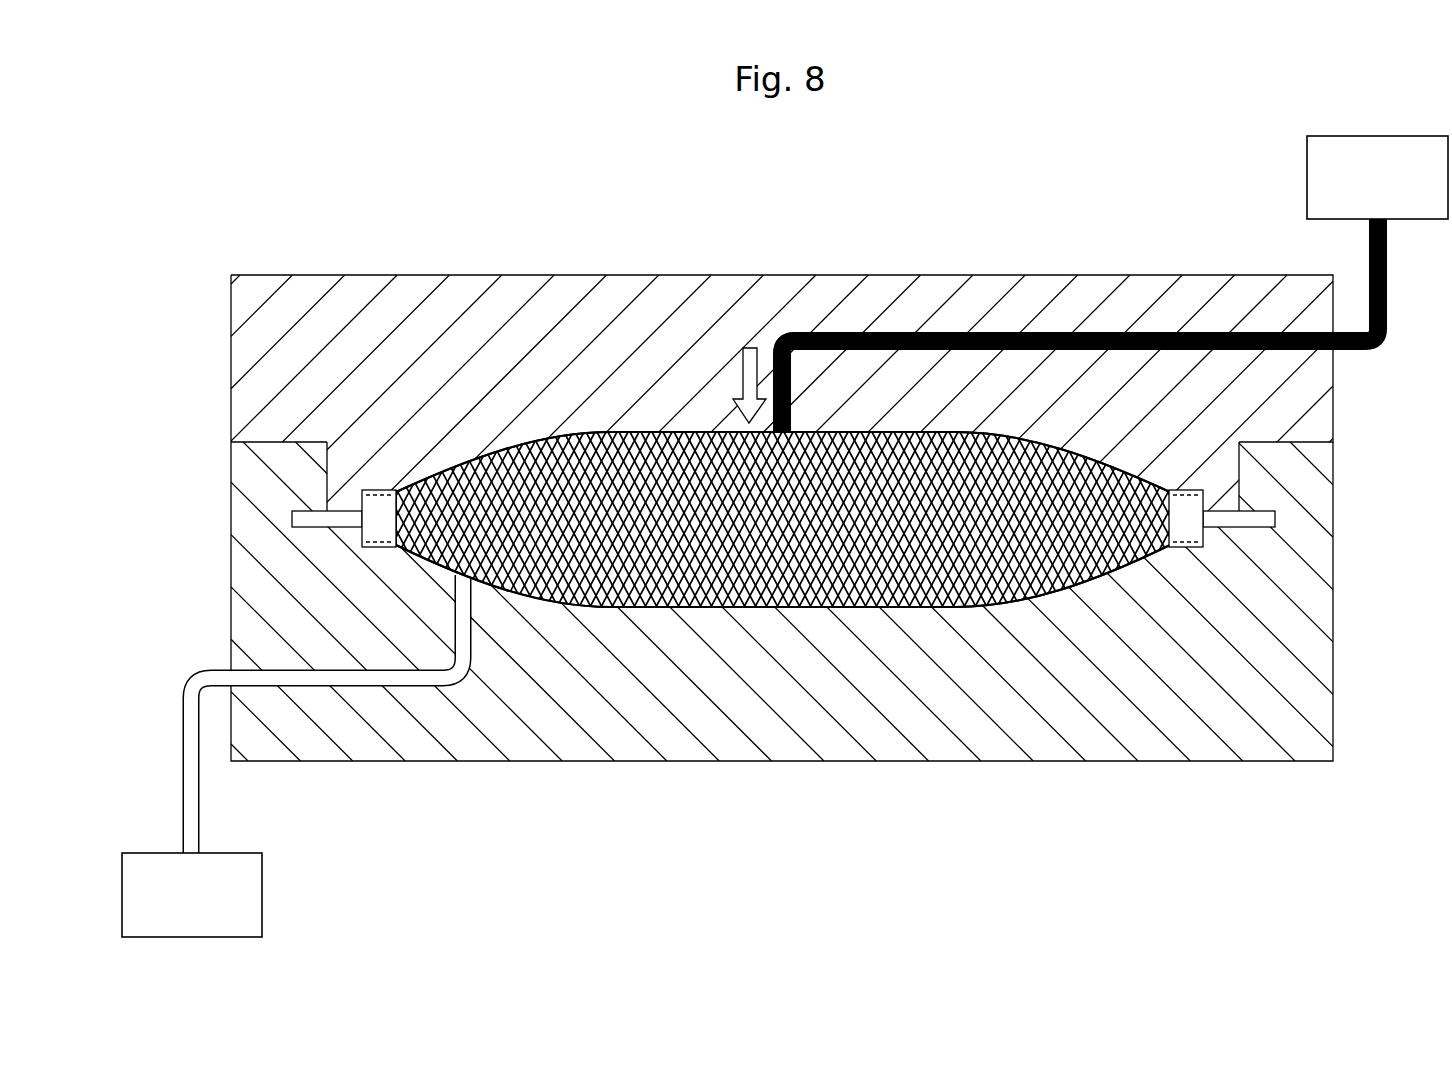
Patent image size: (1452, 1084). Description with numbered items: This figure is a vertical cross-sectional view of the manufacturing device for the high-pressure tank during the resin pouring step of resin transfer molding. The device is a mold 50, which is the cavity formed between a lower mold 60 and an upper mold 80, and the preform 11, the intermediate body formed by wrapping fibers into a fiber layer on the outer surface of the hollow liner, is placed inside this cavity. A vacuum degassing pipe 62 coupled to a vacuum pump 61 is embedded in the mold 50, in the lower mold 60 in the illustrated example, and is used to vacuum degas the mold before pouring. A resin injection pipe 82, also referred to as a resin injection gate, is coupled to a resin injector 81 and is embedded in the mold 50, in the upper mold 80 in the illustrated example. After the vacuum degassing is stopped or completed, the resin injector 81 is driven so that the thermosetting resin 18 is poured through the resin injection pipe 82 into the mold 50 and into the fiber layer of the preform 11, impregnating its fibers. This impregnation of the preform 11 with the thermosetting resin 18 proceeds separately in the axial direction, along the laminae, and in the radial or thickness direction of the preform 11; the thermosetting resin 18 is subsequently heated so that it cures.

The mold 50 is at (272, 258).
The upper mold 80 is at (216, 380).
The lower mold 60 is at (216, 540).
The preform 11 is at (813, 612).
The thermosetting resin 18 is at (880, 333).
The resin injection pipe 82 is at (1085, 333).
The resin injector 81 is at (1305, 180).
The vacuum pump 61 is at (263, 893).
The vacuum degassing pipe 62 is at (366, 688).